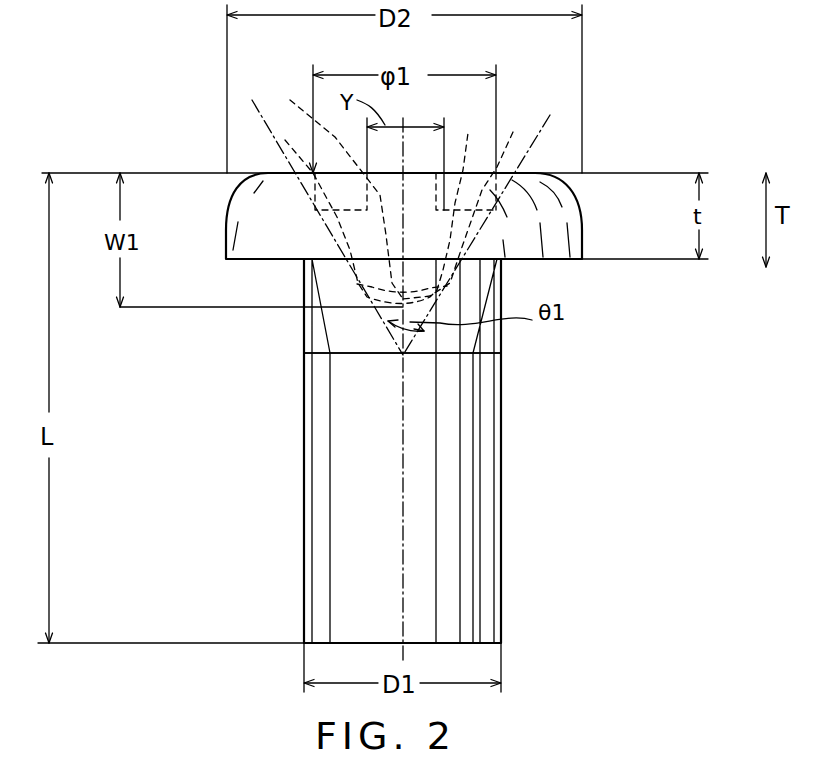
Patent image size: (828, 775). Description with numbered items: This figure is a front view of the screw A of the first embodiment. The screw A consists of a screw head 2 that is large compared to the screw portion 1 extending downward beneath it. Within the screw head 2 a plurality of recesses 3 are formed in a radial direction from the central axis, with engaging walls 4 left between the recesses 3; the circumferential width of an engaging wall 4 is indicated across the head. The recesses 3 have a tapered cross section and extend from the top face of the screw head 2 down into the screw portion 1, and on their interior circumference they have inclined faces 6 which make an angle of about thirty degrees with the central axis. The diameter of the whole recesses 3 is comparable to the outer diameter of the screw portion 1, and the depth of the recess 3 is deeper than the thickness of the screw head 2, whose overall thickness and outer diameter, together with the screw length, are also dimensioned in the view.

The screw portion 1 is at (500, 472).
The screw head 2 is at (543, 173).
The recesses 3 is at (375, 205).
The engaging walls 4 is at (339, 188).
The inclined faces 6 is at (463, 204).
The screw A is at (518, 368).